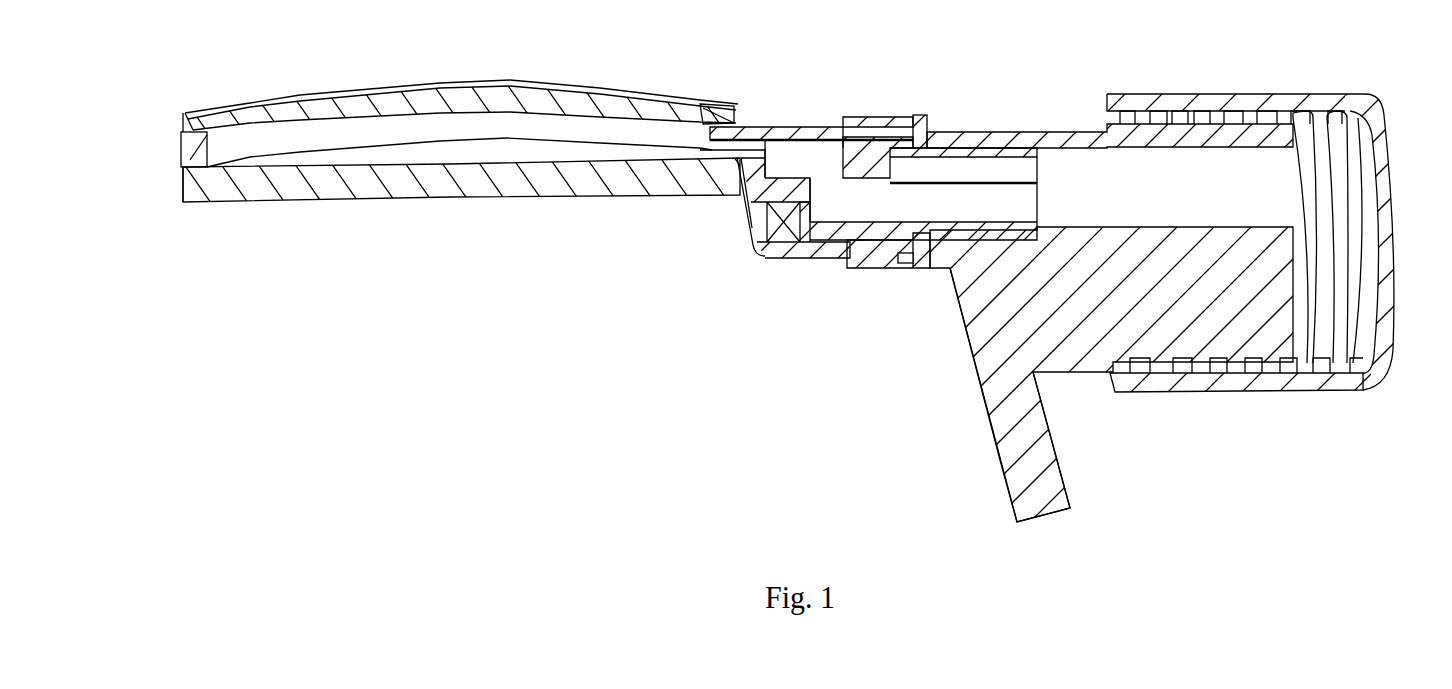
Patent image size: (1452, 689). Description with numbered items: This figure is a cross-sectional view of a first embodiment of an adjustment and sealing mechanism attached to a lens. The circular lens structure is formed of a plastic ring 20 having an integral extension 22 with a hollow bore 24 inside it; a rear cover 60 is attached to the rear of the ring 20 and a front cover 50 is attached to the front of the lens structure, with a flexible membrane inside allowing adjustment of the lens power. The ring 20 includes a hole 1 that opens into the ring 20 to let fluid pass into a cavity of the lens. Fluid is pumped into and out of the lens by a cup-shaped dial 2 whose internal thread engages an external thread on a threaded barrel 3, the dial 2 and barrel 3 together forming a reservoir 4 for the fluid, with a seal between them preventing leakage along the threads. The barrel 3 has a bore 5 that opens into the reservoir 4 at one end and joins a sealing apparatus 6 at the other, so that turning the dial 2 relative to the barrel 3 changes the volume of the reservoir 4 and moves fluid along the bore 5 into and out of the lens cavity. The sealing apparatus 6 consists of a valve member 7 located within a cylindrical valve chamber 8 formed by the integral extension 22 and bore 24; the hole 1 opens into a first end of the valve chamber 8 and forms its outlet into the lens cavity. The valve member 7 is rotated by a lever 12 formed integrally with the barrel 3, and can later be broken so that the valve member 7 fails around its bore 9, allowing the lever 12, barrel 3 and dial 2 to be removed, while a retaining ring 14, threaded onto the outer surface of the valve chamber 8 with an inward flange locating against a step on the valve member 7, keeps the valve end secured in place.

The hole 1 is at (703, 118).
The dial 2 is at (1377, 122).
The threaded barrel 3 is at (1228, 132).
The reservoir 4 is at (1365, 403).
The bore 5 is at (1112, 172).
The sealing apparatus 6 is at (899, 72).
The valve member 7 is at (925, 117).
The valve chamber 8 is at (805, 250).
The bore 9 is at (984, 165).
The lever 12 is at (1012, 487).
The retaining ring 14 is at (885, 268).
The ring 20 is at (190, 147).
The integral extension 22 is at (750, 235).
The hollow bore 24 is at (832, 148).
The front cover 50 is at (580, 83).
The rear cover 60 is at (423, 193).